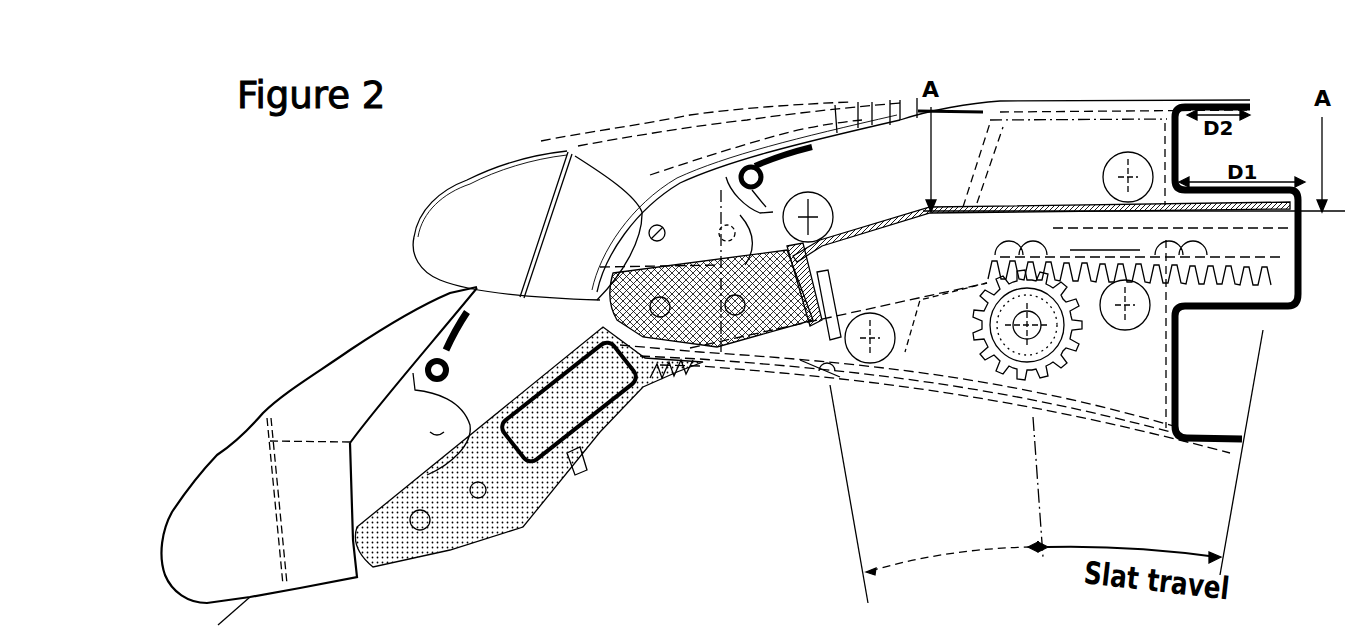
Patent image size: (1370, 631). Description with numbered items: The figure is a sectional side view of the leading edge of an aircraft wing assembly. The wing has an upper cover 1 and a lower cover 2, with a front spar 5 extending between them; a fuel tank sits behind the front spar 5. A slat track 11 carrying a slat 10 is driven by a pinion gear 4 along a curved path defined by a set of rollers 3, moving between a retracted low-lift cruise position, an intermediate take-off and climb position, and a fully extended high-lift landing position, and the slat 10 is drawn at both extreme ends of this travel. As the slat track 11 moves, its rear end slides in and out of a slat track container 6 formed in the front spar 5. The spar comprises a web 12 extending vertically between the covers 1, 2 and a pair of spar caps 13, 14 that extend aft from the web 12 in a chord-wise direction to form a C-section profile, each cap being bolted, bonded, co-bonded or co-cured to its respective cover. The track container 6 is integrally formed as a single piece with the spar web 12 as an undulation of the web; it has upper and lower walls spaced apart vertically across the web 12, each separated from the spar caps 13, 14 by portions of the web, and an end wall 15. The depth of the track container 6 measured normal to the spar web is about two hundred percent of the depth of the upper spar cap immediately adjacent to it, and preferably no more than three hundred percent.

The upper cover 1 is at (1120, 100).
The lower cover 2 is at (928, 398).
The rollers 3 is at (1138, 148).
The pinion gear 4 is at (1007, 368).
The front spar 5 is at (1217, 358).
The slat track container 6 is at (1249, 278).
The slat 10 is at (417, 262).
The slat track 11 is at (1222, 277).
The spar web 12 is at (1183, 147).
The spar cap 13 is at (1207, 440).
The spar cap 14 is at (1220, 104).
The end wall 15 is at (1307, 247).